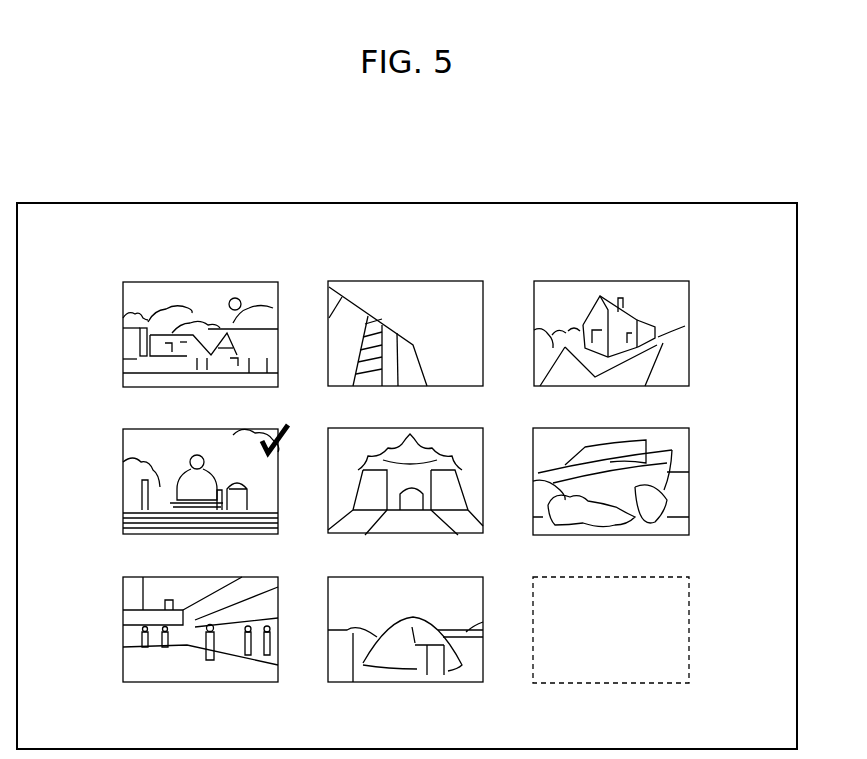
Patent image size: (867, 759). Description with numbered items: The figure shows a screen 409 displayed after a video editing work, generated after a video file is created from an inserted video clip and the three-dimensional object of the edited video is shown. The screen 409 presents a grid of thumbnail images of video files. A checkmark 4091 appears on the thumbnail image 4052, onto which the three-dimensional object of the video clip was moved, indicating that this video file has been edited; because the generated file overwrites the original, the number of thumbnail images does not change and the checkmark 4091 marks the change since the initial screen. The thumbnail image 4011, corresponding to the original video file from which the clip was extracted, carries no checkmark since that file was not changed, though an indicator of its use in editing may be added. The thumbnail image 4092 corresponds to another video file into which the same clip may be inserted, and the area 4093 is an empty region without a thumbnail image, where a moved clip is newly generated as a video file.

The screen 409 is at (103, 203).
The thumbnail image 4092 is at (664, 290).
The thumbnail image 4052 is at (135, 444).
The checkmark 4091 is at (289, 443).
The area 4093 is at (678, 614).
The thumbnail image 4011 is at (435, 670).